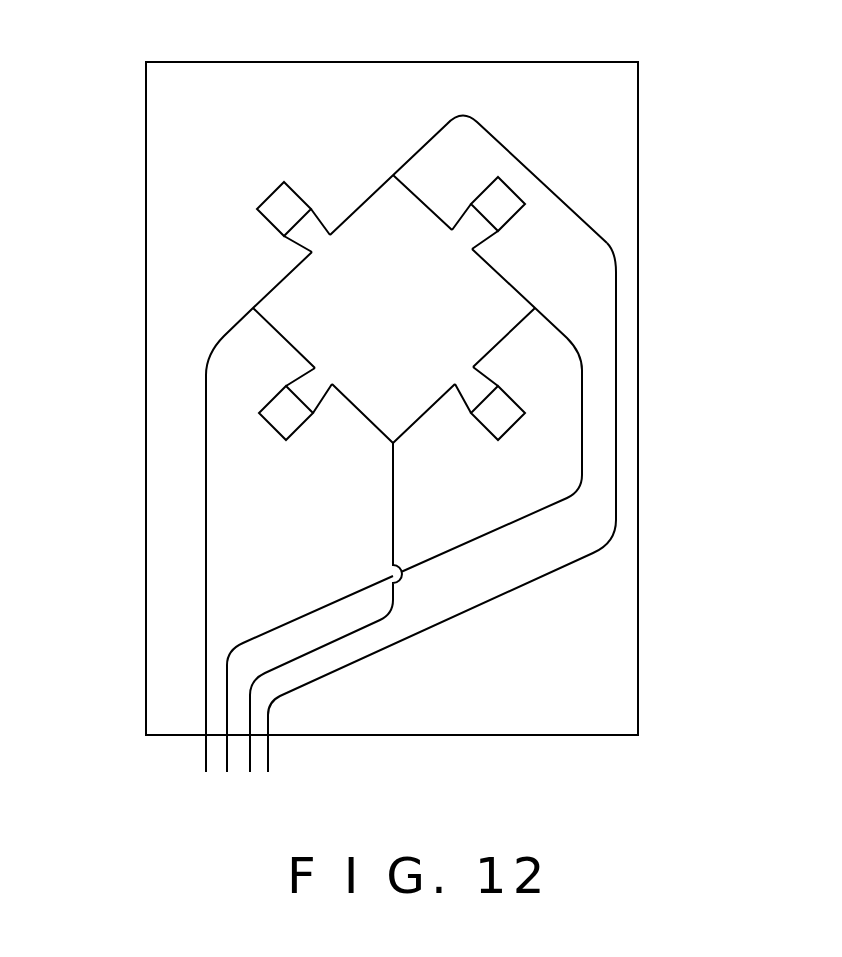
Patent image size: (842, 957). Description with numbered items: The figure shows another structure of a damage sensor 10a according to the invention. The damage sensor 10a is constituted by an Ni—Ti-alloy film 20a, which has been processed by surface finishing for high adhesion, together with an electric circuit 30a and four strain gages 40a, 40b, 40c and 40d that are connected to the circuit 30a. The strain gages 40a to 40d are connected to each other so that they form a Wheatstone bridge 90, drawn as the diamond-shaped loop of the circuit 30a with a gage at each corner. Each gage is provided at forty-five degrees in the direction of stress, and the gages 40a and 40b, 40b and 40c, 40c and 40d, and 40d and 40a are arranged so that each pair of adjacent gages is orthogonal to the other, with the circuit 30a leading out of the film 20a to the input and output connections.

The damage sensor 10a is at (660, 242).
The Ni—Ti-alloy film 20a is at (170, 678).
The electric circuit 30a is at (438, 113).
The Wheatstone bridge 90 is at (348, 198).
The strain gage 40a is at (282, 197).
The strain gage 40b is at (503, 193).
The strain gage 40c is at (512, 420).
The strain gage 40d is at (288, 427).